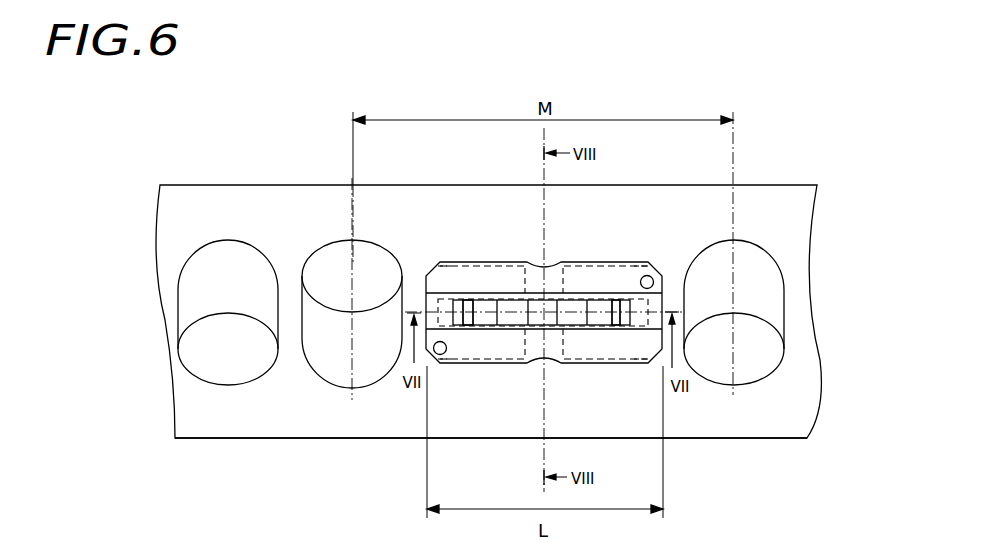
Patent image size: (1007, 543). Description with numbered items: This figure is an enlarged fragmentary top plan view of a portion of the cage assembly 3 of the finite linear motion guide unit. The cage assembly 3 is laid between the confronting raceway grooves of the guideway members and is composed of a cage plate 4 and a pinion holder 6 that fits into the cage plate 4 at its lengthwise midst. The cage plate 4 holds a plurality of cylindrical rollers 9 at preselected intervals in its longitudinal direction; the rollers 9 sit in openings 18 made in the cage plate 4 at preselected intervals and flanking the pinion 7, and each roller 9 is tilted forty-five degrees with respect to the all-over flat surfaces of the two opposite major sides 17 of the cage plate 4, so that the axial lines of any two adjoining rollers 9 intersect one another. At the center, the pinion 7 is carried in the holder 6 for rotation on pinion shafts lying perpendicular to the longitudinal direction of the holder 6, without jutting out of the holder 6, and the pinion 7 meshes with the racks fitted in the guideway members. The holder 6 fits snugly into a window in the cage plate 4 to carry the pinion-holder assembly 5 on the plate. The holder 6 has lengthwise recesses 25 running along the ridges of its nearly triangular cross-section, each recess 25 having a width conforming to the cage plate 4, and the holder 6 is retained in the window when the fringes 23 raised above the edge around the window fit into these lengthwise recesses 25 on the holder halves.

The cage assembly 3 is at (758, 185).
The cage plate 4 is at (757, 422).
The pinion-holder assembly 5 is at (514, 152).
The pinion holder 6 is at (497, 273).
The pinion 7 is at (480, 305).
The cylindrical roller 9 is at (318, 348).
The major side 17 is at (650, 223).
The opening 18 is at (233, 250).
The fringe 23 is at (483, 263).
The recess 25 is at (453, 260).